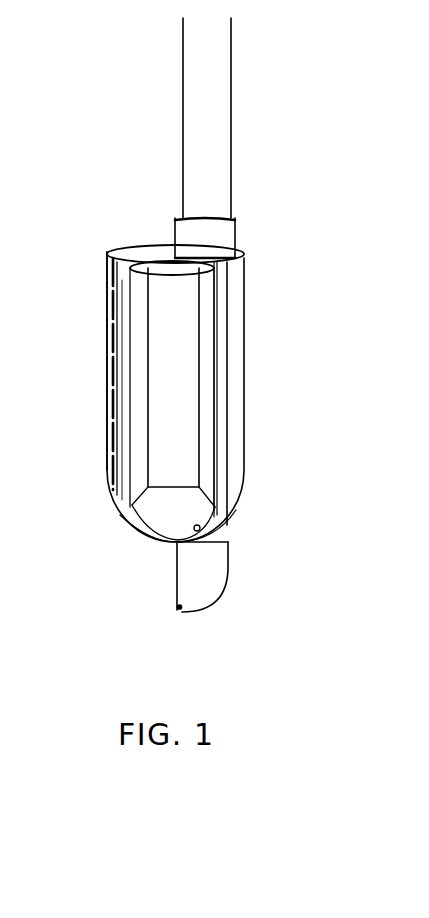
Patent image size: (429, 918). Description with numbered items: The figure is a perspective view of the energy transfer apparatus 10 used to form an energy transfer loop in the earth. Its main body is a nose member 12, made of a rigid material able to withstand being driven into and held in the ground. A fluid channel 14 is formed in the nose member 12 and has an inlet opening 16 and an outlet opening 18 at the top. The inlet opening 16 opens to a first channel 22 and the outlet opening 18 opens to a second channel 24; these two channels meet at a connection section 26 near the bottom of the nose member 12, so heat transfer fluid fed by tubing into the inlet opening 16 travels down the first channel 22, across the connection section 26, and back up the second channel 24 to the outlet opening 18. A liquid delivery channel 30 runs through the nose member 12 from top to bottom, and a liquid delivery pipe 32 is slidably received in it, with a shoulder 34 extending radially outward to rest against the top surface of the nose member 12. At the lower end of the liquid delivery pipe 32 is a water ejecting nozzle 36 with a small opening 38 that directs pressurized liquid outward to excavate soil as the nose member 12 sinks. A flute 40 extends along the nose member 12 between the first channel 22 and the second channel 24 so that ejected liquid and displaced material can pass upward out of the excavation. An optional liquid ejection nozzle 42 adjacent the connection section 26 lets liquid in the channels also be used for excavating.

The energy transfer apparatus 10 is at (294, 284).
The nose member 12 is at (213, 327).
The fluid channel 14 is at (103, 245).
The inlet opening 16 is at (140, 247).
The outlet opening 18 is at (176, 270).
The first channel 22 is at (118, 351).
The second channel 24 is at (180, 371).
The connection section 26 is at (140, 531).
The liquid delivery channel 30 is at (238, 258).
The liquid delivery pipe 32 is at (224, 102).
The shoulder 34 is at (236, 234).
The water ejecting nozzle 36 is at (218, 590).
The opening 38 is at (178, 607).
The flute 40 is at (127, 462).
The liquid ejection nozzle 42 is at (206, 529).